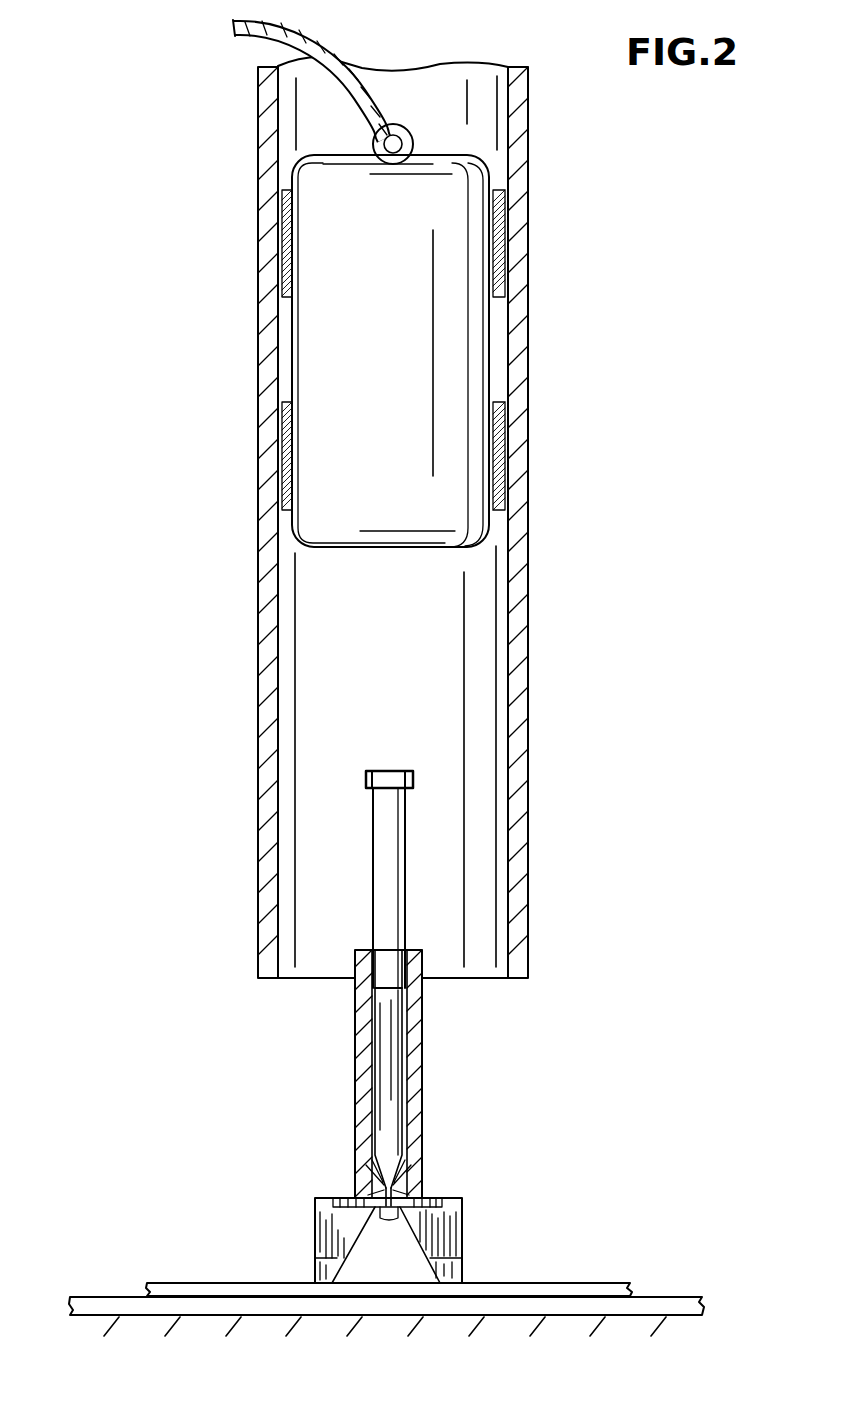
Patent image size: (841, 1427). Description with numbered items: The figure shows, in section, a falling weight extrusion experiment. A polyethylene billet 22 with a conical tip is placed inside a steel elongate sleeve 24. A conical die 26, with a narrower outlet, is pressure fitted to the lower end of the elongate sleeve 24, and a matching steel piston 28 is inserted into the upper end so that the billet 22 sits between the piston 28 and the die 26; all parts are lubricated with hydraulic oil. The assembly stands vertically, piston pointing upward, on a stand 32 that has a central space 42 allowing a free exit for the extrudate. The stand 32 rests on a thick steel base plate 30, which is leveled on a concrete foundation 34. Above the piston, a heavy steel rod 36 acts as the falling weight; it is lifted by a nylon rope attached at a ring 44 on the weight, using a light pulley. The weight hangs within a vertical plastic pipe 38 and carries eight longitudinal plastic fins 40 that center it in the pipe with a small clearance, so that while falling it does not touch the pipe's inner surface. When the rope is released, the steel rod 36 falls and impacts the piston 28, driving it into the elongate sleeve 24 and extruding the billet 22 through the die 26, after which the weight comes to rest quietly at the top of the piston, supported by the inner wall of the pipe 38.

The billet 22 is at (393, 1024).
The elongate sleeve 24 is at (422, 1068).
The conical die 26 is at (410, 1185).
The piston 28 is at (397, 890).
The base plate 30 is at (548, 1283).
The stand 32 is at (488, 1222).
The concrete foundation 34 is at (122, 1296).
The steel rod 36 is at (447, 198).
The vertical plastic pipe 38 is at (528, 617).
The longitudinal plastic fins 40 is at (280, 428).
The central space 42 is at (382, 1257).
The ring 44 is at (374, 144).